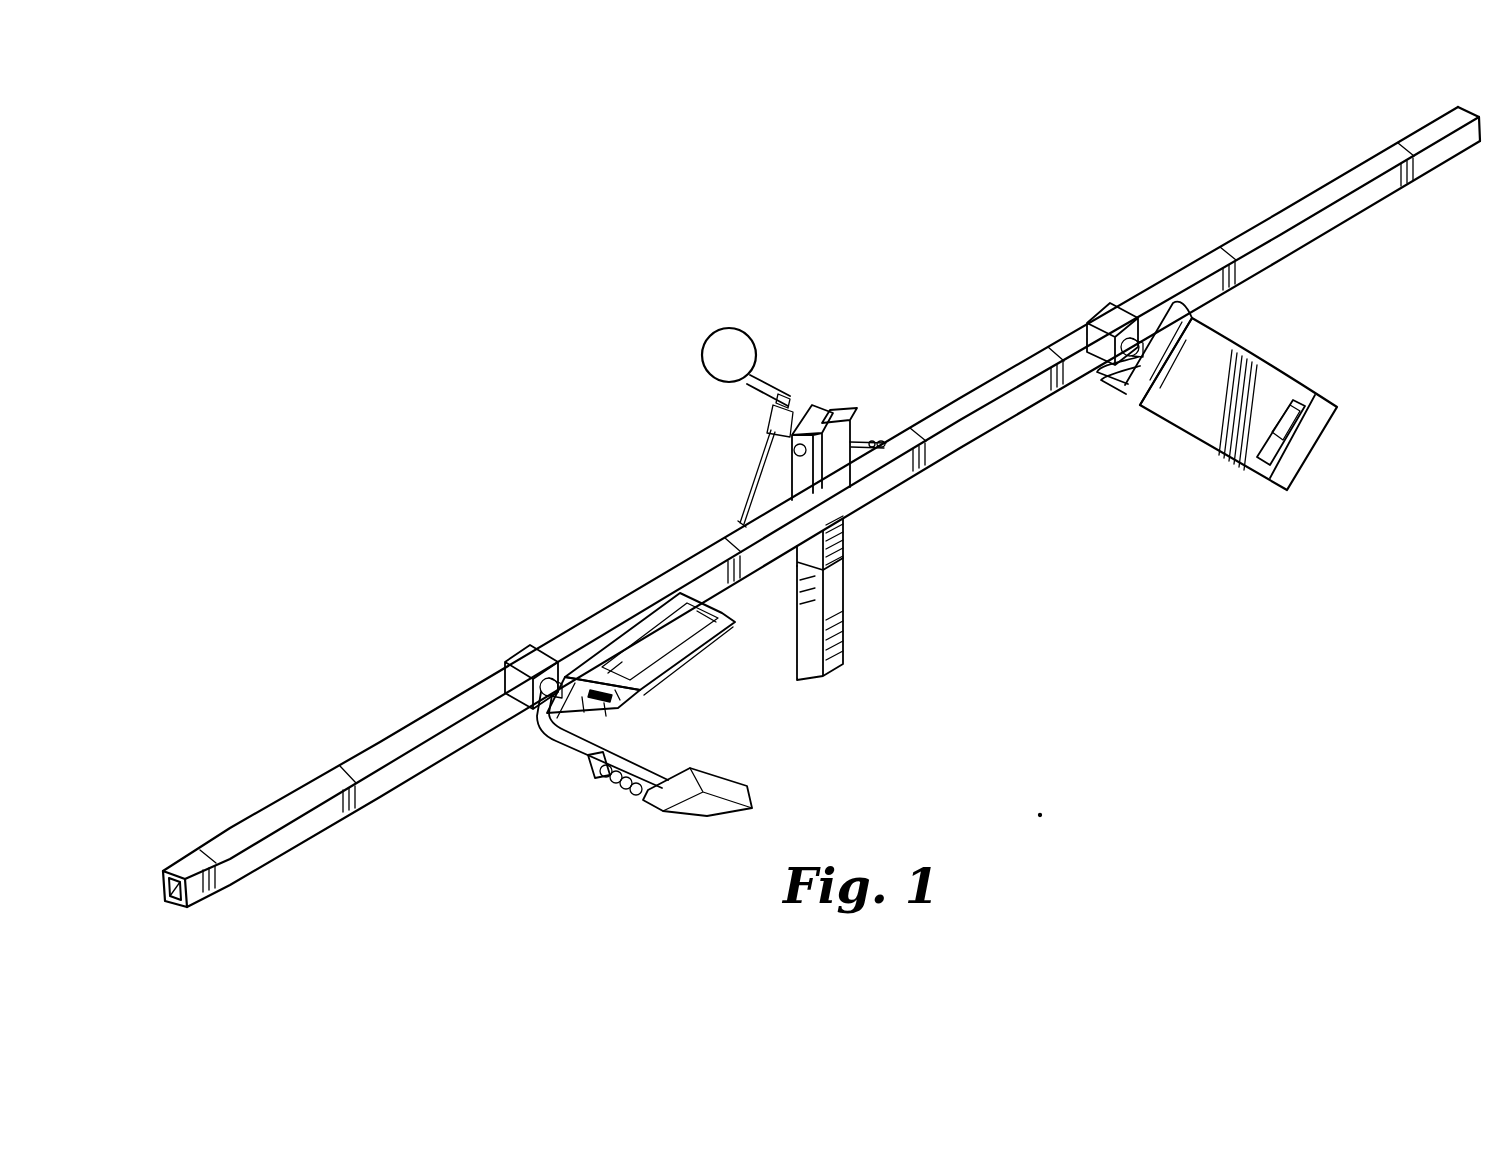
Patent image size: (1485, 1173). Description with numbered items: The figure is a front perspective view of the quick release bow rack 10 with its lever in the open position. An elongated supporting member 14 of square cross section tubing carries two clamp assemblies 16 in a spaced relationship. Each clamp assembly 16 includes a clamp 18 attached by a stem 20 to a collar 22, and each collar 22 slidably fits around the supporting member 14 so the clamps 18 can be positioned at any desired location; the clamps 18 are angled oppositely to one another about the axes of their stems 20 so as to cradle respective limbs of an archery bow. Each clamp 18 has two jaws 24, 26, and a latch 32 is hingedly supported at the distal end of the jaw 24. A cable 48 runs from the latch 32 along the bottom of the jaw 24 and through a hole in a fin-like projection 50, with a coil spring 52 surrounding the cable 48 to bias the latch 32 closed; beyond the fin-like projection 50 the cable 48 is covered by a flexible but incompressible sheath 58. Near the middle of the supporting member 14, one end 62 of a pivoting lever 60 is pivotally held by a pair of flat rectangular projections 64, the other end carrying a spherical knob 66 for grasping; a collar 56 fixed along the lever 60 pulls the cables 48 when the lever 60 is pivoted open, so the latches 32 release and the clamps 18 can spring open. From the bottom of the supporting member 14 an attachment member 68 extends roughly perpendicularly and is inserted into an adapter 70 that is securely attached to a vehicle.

The bow rack 10 is at (1000, 607).
The elongated supporting member 14 is at (1262, 222).
The clamp assembly 16 is at (1260, 319).
The clamp 18 is at (1215, 435).
The stem 20 is at (1125, 303).
The collar 22 is at (1090, 322).
The jaw 24 is at (1292, 354).
The jaw 26 is at (1128, 400).
The latch 32 is at (1282, 496).
The cable 48 is at (873, 443).
The fin-like projection 50 is at (600, 774).
The coil spring 52 is at (612, 787).
The collar 56 is at (793, 424).
The sheath 58 is at (1096, 378).
The pivoting lever 60 is at (770, 400).
The end of lever 62 is at (826, 413).
The projection 64 is at (852, 446).
The spherical knob 66 is at (708, 324).
The attachment member 68 is at (848, 552).
The adapter 70 is at (848, 626).